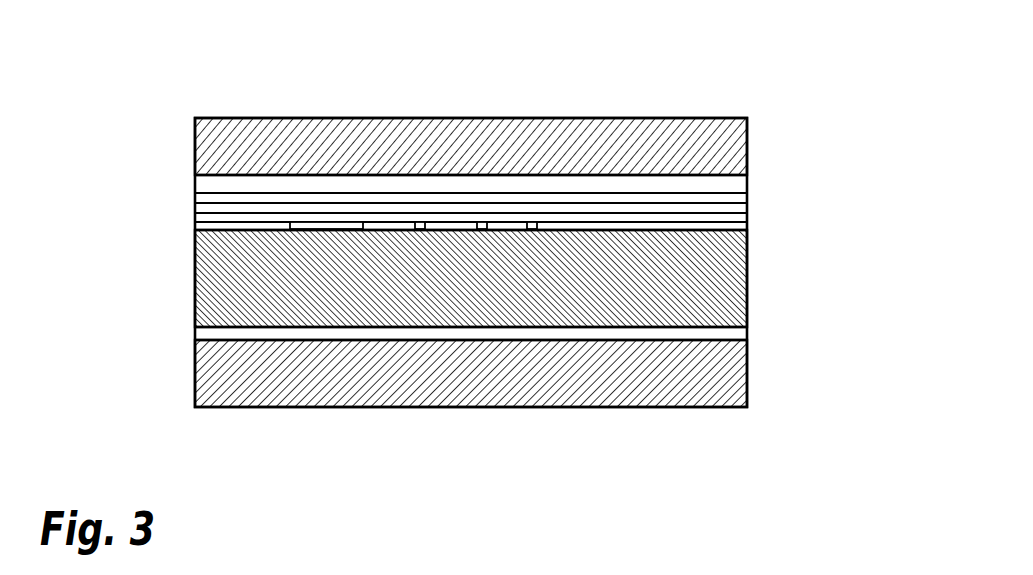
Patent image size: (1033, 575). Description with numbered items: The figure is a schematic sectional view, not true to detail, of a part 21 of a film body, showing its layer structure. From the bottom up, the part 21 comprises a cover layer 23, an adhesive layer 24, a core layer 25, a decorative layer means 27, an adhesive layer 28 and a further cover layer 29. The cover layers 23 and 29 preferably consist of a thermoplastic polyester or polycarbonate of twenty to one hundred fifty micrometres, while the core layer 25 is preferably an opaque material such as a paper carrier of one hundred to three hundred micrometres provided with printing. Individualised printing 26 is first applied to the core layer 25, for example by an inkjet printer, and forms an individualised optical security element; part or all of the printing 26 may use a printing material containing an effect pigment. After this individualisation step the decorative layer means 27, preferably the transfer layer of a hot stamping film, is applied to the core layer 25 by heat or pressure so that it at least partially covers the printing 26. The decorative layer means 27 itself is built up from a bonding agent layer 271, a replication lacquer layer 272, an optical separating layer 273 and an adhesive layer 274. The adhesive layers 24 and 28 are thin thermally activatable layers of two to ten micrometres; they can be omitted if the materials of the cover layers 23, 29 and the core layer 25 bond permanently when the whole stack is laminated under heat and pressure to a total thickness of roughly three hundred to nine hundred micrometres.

The part of the film body 21 is at (688, 82).
The cover layer 23 is at (205, 390).
The adhesive layer 24 is at (202, 333).
The core layer 25 is at (200, 278).
The individualised printing 26 is at (333, 222).
The decorative layer means 27 is at (510, 230).
The bonding agent layer 271 is at (740, 195).
The replication lacquer layer 272 is at (740, 205).
The optical separating layer 273 is at (740, 214).
The adhesive layer 274 is at (740, 223).
The adhesive layer 28 is at (210, 185).
The cover layer 29 is at (196, 148).